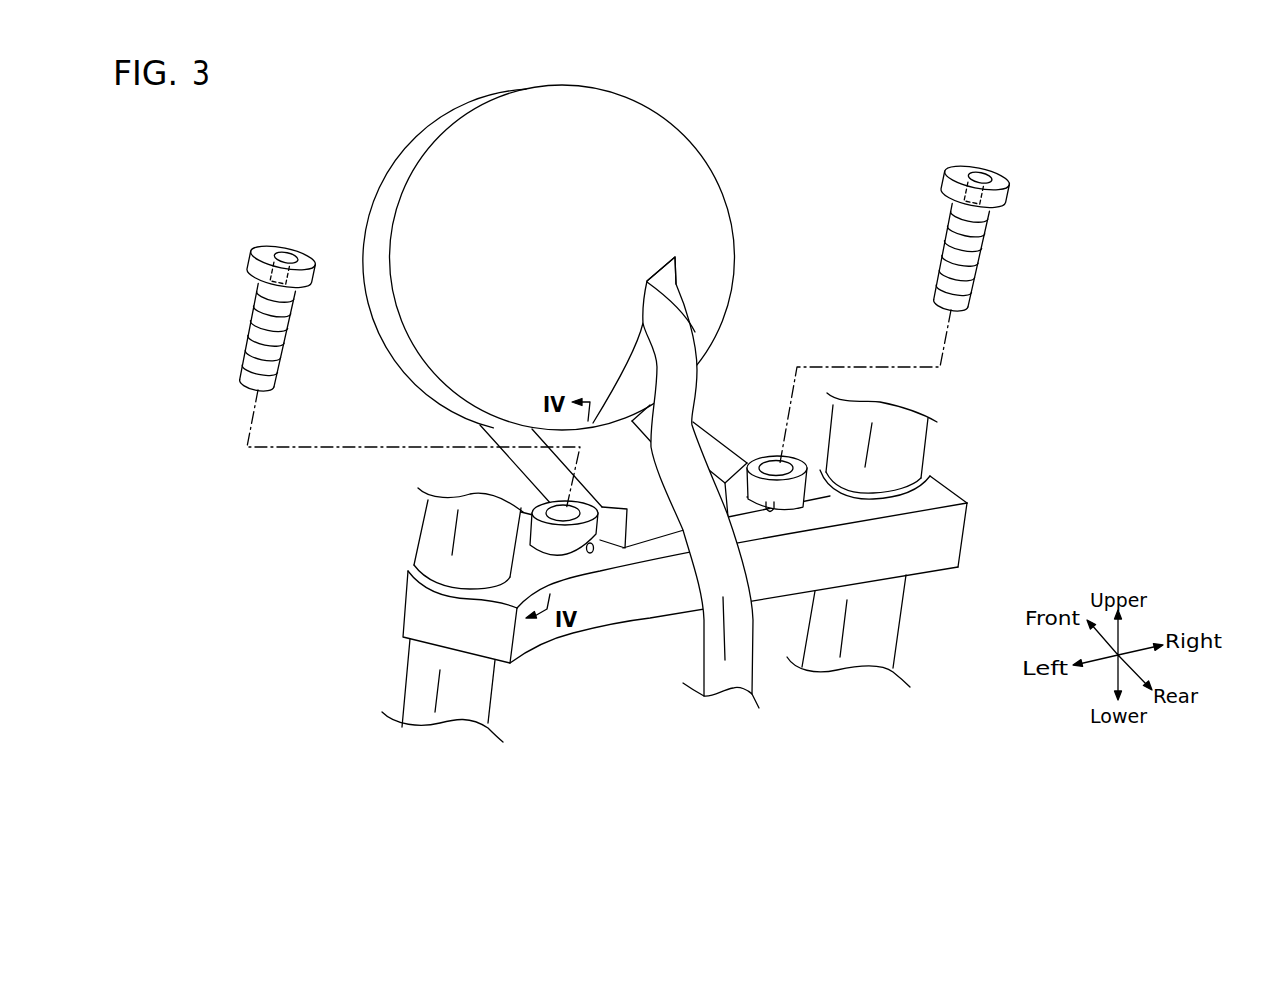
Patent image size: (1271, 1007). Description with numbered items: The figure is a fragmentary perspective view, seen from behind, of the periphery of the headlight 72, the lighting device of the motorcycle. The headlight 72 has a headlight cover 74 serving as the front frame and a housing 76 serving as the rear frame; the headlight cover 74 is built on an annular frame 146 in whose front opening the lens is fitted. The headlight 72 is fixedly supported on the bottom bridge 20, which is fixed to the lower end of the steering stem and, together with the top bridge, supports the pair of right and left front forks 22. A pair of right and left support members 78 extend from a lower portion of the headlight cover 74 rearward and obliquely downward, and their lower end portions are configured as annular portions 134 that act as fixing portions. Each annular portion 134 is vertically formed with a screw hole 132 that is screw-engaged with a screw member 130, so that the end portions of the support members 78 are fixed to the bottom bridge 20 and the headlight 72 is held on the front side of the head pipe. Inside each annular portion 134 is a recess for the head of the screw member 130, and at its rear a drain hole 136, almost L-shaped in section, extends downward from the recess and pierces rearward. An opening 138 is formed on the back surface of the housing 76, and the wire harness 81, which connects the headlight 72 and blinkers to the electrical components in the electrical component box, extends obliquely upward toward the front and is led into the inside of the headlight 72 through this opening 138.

The bottom bridge 20 is at (947, 533).
The front forks 22 is at (433, 527).
The headlight 72 is at (521, 242).
The headlight cover 74 is at (416, 258).
The annular frame 146 is at (425, 128).
The housing 76 is at (576, 100).
The support members 78 is at (537, 463).
The wire harness 81 is at (701, 463).
The screw members 130 is at (257, 308).
The screw holes 132 is at (567, 512).
The annular portions 134 is at (647, 488).
The drain hole 136 is at (600, 550).
The opening 138 is at (670, 280).